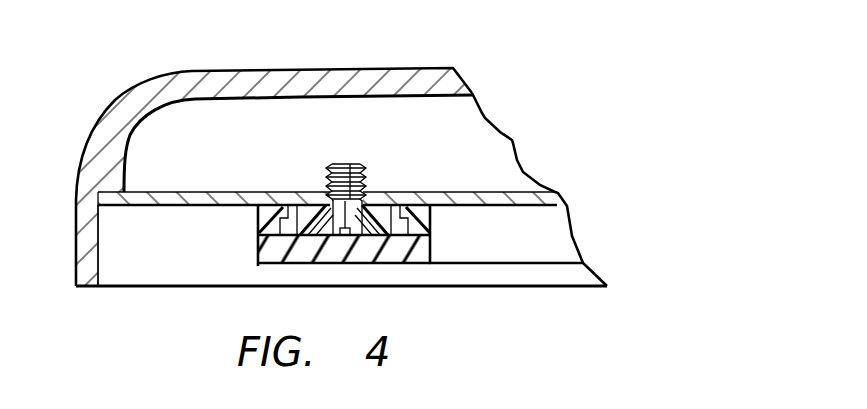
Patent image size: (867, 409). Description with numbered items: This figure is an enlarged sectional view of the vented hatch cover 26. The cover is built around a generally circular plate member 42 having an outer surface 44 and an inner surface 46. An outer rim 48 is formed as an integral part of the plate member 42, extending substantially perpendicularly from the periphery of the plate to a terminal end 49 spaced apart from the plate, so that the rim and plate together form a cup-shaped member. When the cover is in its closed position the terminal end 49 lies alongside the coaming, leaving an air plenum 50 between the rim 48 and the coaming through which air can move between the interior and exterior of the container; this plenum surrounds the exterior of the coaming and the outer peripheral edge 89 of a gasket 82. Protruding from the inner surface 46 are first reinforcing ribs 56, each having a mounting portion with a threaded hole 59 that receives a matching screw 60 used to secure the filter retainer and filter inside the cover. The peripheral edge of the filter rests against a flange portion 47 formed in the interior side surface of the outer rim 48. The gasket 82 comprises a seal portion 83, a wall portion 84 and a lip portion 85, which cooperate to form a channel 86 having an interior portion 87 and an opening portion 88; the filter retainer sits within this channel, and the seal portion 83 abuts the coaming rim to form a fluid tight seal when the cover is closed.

The vented hatch cover 26 is at (528, 55).
The circular plate member 42 is at (157, 86).
The outer surface 44 is at (403, 67).
The inner surface 46 is at (440, 97).
The flange portion 47 is at (108, 188).
The outer rim 48 is at (86, 231).
The terminal end 49 is at (91, 288).
The air plenum 50 is at (166, 256).
The first reinforcing ribs 56 is at (225, 161).
The threaded hole 59 is at (367, 192).
The screw 60 is at (340, 163).
The gasket 82 is at (422, 263).
The seal portion 83 is at (256, 266).
The wall portion 84 is at (258, 213).
The lip portion 85 is at (290, 207).
The channel 86 is at (313, 212).
The interior portion 87 is at (405, 227).
The opening portion 88 is at (372, 207).
The outer peripheral edge 89 is at (258, 245).